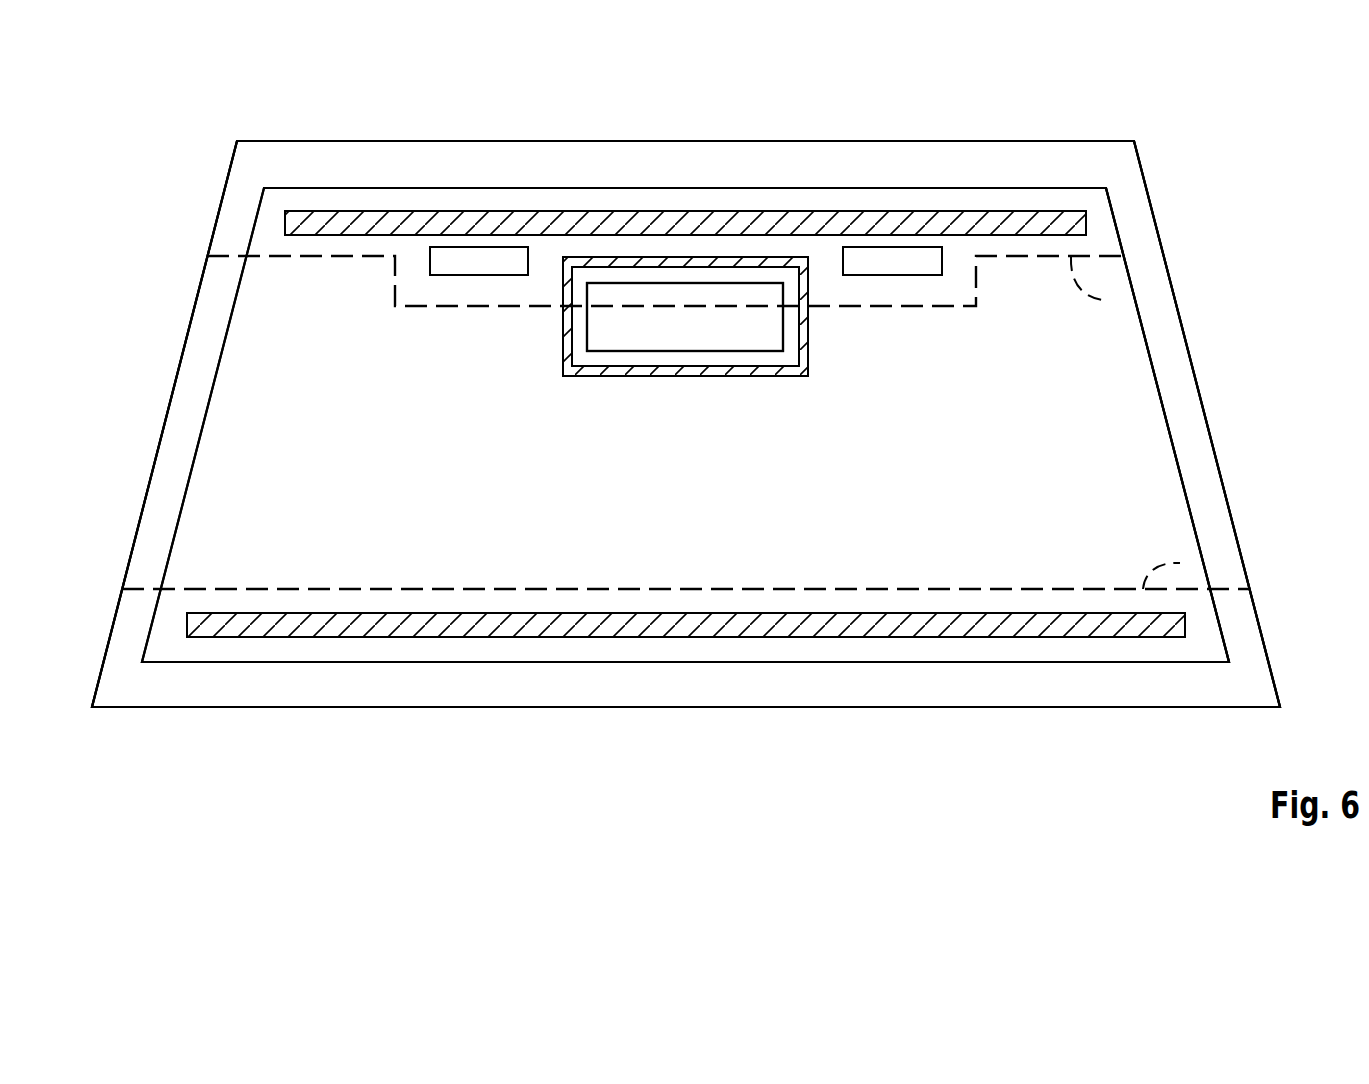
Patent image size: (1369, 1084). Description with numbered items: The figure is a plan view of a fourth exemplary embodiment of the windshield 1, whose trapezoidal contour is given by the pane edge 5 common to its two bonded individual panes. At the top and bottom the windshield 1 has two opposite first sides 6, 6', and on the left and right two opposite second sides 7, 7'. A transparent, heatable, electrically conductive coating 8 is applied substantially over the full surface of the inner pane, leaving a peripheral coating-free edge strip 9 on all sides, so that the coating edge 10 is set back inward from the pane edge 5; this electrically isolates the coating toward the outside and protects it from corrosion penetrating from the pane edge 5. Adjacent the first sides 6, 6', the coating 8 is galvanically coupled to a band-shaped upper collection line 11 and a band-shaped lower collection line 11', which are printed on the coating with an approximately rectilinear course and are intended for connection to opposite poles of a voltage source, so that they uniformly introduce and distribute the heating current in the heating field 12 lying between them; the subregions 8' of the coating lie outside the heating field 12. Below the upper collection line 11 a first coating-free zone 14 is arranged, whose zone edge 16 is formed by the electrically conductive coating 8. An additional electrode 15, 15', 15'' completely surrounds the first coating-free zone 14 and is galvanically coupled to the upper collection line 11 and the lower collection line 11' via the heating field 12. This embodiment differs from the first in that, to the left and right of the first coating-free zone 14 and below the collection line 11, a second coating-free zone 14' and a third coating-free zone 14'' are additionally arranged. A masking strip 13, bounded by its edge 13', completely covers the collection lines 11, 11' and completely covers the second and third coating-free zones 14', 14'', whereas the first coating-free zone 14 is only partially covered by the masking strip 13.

The windshield 1 is at (1172, 128).
The pane edge 5 is at (679, 431).
The first side 6 is at (685, 108).
The first side 6' is at (686, 746).
The second side 7 is at (137, 424).
The second side 7' is at (1228, 424).
The electrically conductive coating 8 is at (730, 425).
The subregions of the electrically conductive coating 8' is at (685, 431).
The peripheral coating-free edge strip 9 is at (1183, 422).
The coating edge 10 is at (1157, 373).
The collection line 11 is at (685, 155).
The collection line 11' is at (686, 699).
The heating field 12 is at (1050, 452).
The masking strip 13 is at (727, 431).
The edge of the masking strip 13' is at (1198, 423).
The first coating-free zone 14 is at (685, 213).
The second coating-free zone 14' is at (479, 175).
The third coating-free zone 14'' is at (892, 175).
The additional electrode 15 is at (455, 226).
The additional electrode 15' is at (455, 226).
The additional electrode 15'' is at (455, 316).
The zone edge 16 is at (758, 283).